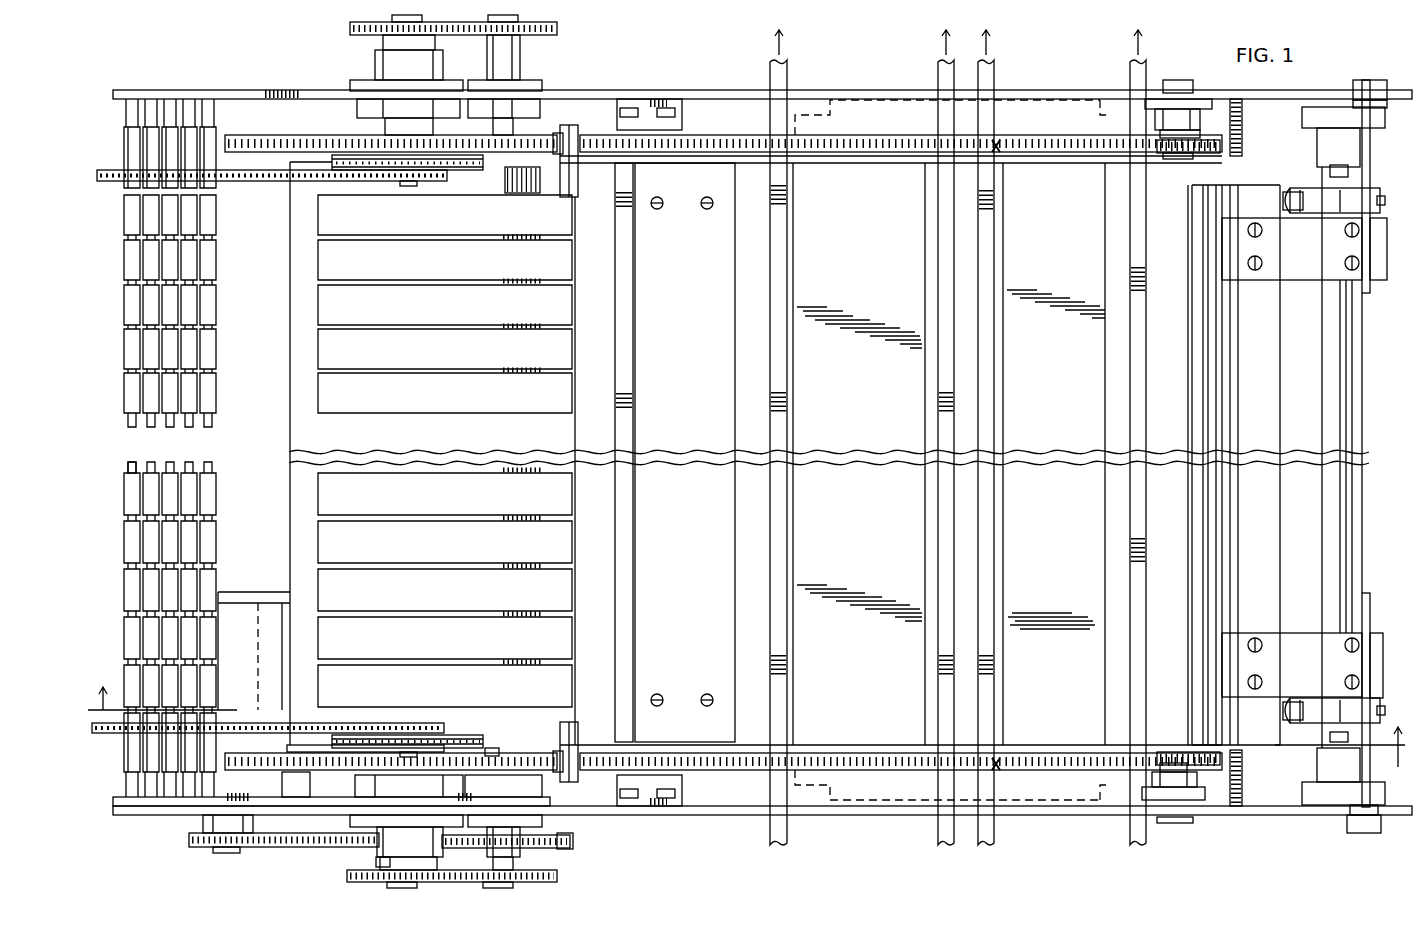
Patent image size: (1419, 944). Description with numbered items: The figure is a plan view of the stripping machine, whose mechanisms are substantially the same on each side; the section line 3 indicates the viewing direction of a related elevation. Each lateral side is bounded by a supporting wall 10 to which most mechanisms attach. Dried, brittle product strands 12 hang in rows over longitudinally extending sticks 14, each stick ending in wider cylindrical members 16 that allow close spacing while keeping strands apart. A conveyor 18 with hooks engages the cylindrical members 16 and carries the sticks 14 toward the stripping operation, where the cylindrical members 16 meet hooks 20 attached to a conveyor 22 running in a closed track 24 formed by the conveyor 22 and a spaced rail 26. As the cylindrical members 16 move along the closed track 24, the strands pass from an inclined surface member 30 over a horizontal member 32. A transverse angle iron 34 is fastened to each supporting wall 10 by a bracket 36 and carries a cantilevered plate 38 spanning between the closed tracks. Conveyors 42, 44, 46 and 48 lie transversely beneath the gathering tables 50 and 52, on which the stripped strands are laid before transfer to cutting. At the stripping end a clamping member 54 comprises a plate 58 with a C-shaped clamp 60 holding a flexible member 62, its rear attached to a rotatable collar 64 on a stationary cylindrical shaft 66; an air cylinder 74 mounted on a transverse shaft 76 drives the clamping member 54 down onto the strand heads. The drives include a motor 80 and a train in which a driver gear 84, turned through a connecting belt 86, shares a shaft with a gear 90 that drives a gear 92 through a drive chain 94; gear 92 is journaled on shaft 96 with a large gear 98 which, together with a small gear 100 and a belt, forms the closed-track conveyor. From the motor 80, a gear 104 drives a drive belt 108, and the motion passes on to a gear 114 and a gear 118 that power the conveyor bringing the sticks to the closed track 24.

The supporting wall 10 is at (648, 90).
The product strands 12 is at (215, 246).
The sticks 14 is at (203, 418).
The cylindrical members 16 is at (153, 143).
The conveyor 18 is at (246, 182).
The hooks 20 is at (553, 152).
The conveyor 22 is at (834, 152).
The closed track 24 is at (1064, 152).
The rail 26 is at (1242, 127).
The inclined surface member 30 is at (289, 324).
The horizontal member 32 is at (606, 430).
The angle iron 34 is at (632, 362).
The bracket 36 is at (680, 114).
The plate 38 is at (672, 296).
The conveyor 42 is at (785, 82).
The conveyor 44 is at (936, 76).
The conveyor 46 is at (996, 78).
The conveyor 48 is at (1129, 76).
The gathering table 50 is at (846, 532).
The gathering table 52 is at (1036, 532).
The clamping member 54 is at (1235, 370).
The plate 58 is at (1268, 276).
The C-shaped clamp 60 is at (1276, 524).
The flexible member 62 is at (1196, 198).
The collar 64 is at (1378, 180).
The cylindrical shaft 66 is at (1329, 171).
The air cylinder 74 is at (1324, 212).
The shaft 76 is at (1372, 152).
The motor 80 is at (238, 641).
The driver gear 84 is at (520, 838).
The connecting belt 86 is at (560, 842).
The gear 90 is at (522, 40).
The gear 92 is at (380, 40).
The drive chain 94 is at (468, 34).
The shaft 96 is at (399, 796).
The gear 98 is at (494, 748).
The gear 100 is at (1187, 156).
The gear 104 is at (214, 846).
The drive belt 108 is at (274, 847).
The gear 114 is at (461, 171).
The gear 118 is at (397, 180).
The section line 3- 3 is at (746, 714).